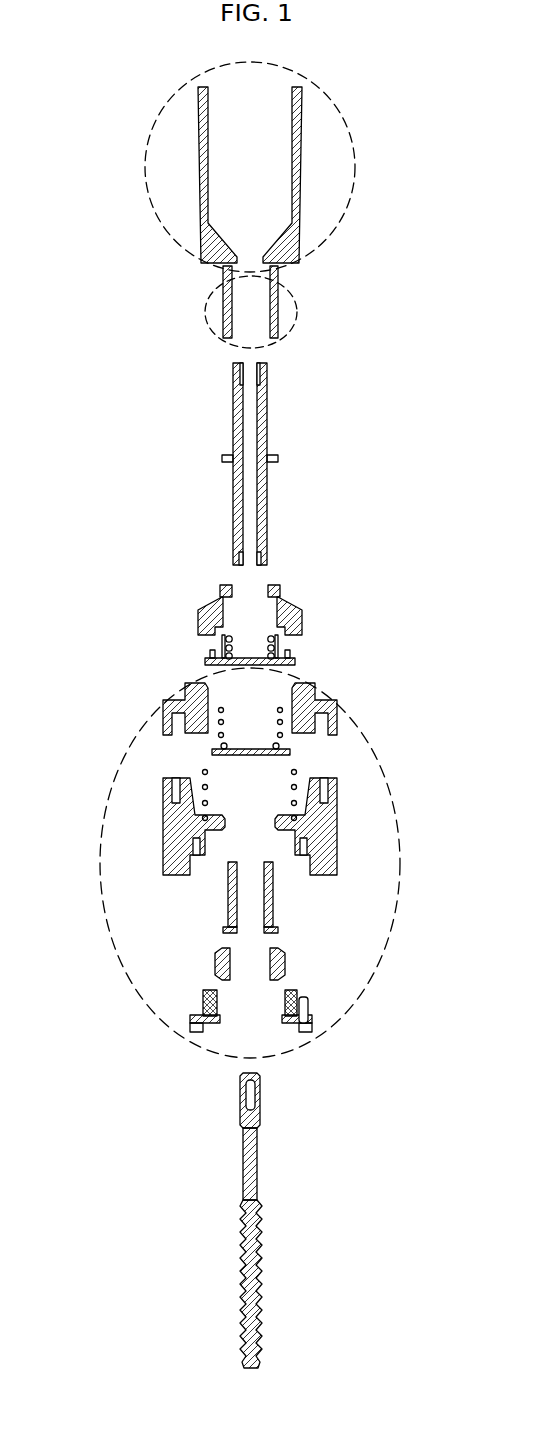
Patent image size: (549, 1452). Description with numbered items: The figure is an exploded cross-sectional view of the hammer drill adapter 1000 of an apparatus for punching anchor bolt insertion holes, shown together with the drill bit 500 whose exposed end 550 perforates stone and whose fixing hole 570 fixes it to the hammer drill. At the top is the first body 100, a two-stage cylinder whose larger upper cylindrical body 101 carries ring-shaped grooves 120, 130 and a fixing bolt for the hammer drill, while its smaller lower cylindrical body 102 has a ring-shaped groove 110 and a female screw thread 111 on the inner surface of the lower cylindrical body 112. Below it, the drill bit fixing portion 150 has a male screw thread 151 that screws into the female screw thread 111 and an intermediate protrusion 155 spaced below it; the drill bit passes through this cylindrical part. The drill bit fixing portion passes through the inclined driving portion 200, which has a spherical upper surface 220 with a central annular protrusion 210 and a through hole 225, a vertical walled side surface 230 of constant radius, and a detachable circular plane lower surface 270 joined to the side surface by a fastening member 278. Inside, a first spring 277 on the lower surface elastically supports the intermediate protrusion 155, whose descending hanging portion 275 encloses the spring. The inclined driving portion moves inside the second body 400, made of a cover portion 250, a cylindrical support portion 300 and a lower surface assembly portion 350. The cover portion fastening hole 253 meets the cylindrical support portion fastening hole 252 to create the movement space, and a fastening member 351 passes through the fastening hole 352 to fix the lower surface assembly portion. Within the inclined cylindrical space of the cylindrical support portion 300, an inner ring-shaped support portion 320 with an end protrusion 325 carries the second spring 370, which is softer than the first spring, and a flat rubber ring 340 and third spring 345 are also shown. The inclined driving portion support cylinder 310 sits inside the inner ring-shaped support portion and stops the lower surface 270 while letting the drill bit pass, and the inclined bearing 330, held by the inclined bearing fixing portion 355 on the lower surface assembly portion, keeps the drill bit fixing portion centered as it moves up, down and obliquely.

The hammer drill adapter 1000 is at (374, 106).
The first body 100 is at (241, 175).
The upper cylindrical body 101 is at (150, 194).
The lower cylindrical body 102 is at (205, 313).
The ring-shaped groove 110 is at (261, 301).
The female screw thread 111 is at (230, 313).
The inner surface of the lower cylindrical body 112 is at (240, 297).
The ring-shaped groove of first body upper cylindrical body 120 is at (198, 137).
The ring-shaped groove of first body upper cylindrical body 130 is at (198, 110).
The drill bit fixing portion 150 is at (253, 464).
The male screw thread 151 is at (263, 377).
The intermediate protrusion 155 is at (279, 458).
The inclined driving portion 200 is at (250, 600).
The annular protrusion 210 is at (240, 612).
The upper surface of inclined driving portion 220 is at (290, 603).
The through hole 225 is at (220, 597).
The side surface of inclined driving portion 230 is at (303, 627).
The cover portion 250 is at (283, 707).
The cylindrical support portion fastening hole 252 is at (323, 792).
The cover portion fastening hole 253 is at (325, 702).
The circular plane lower surface 270 is at (250, 656).
The descending hanging portion of intermediate protrusion 275 is at (226, 647).
The first spring 277 is at (198, 618).
The fastening member 278 is at (211, 656).
The cylindrical support portion 300 is at (247, 854).
The inclined driving portion support cylinder 310 is at (228, 905).
The inner ring-shaped support portion 320 is at (223, 833).
The end protrusion 325 is at (207, 817).
The inclined bearing 330 is at (288, 965).
The flat rubber ring 340 is at (212, 750).
The third spring 345 is at (282, 735).
The lower surface assembly portion 350 is at (300, 1030).
The fastening member 351 is at (312, 1020).
The fastening hole 352 is at (303, 855).
The inclined bearing fixing portion 355 is at (306, 1000).
The second spring 370 is at (165, 783).
The second body 400 is at (400, 880).
The drill bit 500 is at (244, 1220).
The end of drill bit 550 is at (258, 1236).
The fixing hole 570 is at (250, 1095).